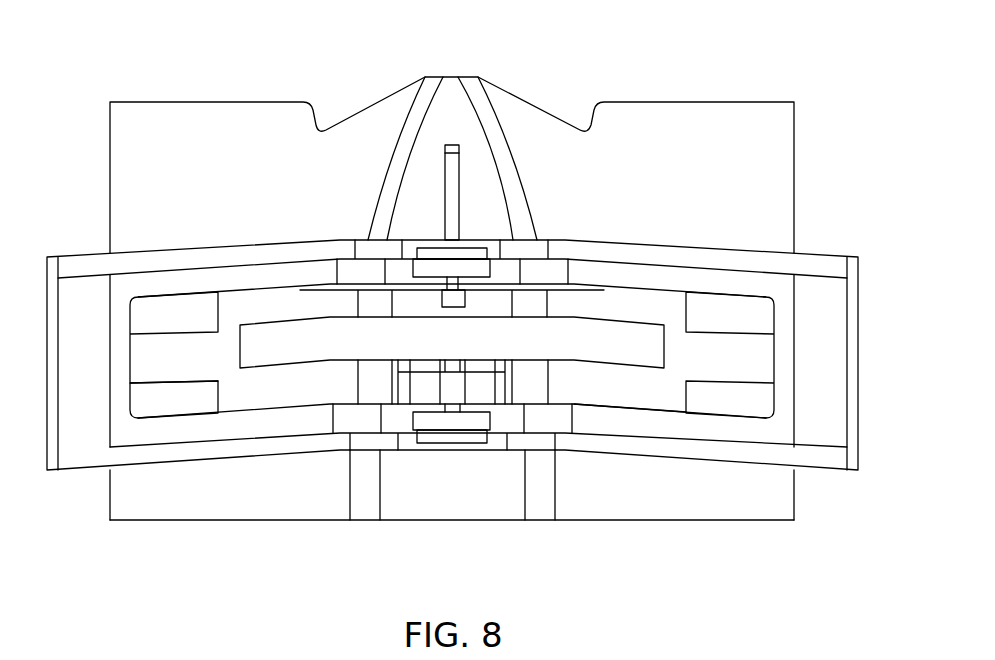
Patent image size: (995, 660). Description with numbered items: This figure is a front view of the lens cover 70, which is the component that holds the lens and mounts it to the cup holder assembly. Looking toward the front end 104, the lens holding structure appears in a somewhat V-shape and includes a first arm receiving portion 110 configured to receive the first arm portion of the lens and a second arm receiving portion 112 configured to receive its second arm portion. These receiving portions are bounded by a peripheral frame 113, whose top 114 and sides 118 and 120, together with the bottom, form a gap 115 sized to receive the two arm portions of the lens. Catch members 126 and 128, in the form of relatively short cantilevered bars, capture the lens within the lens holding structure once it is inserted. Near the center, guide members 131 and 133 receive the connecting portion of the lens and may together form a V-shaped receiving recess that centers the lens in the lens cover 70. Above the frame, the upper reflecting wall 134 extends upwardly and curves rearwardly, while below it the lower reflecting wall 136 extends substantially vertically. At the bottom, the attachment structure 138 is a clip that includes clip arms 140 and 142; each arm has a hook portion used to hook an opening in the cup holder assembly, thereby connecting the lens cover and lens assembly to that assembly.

The lens cover 70 is at (746, 82).
The front end 104 is at (335, 534).
The first arm receiving portion 110 is at (187, 418).
The second arm receiving portion 112 is at (630, 404).
The peripheral frame 113 is at (676, 302).
The top 114 is at (575, 260).
The gap 115 is at (652, 296).
The side 118 is at (783, 317).
The side 120 is at (120, 352).
The catch member 126 is at (731, 310).
The catch member 128 is at (729, 405).
The guide member 131 is at (365, 378).
The guide member 133 is at (536, 377).
The upper reflecting wall 134 is at (528, 110).
The lower reflecting wall 136 is at (693, 506).
The attachment structure 138 is at (425, 478).
The clip arm 140 is at (460, 268).
The clip arm 142 is at (463, 436).